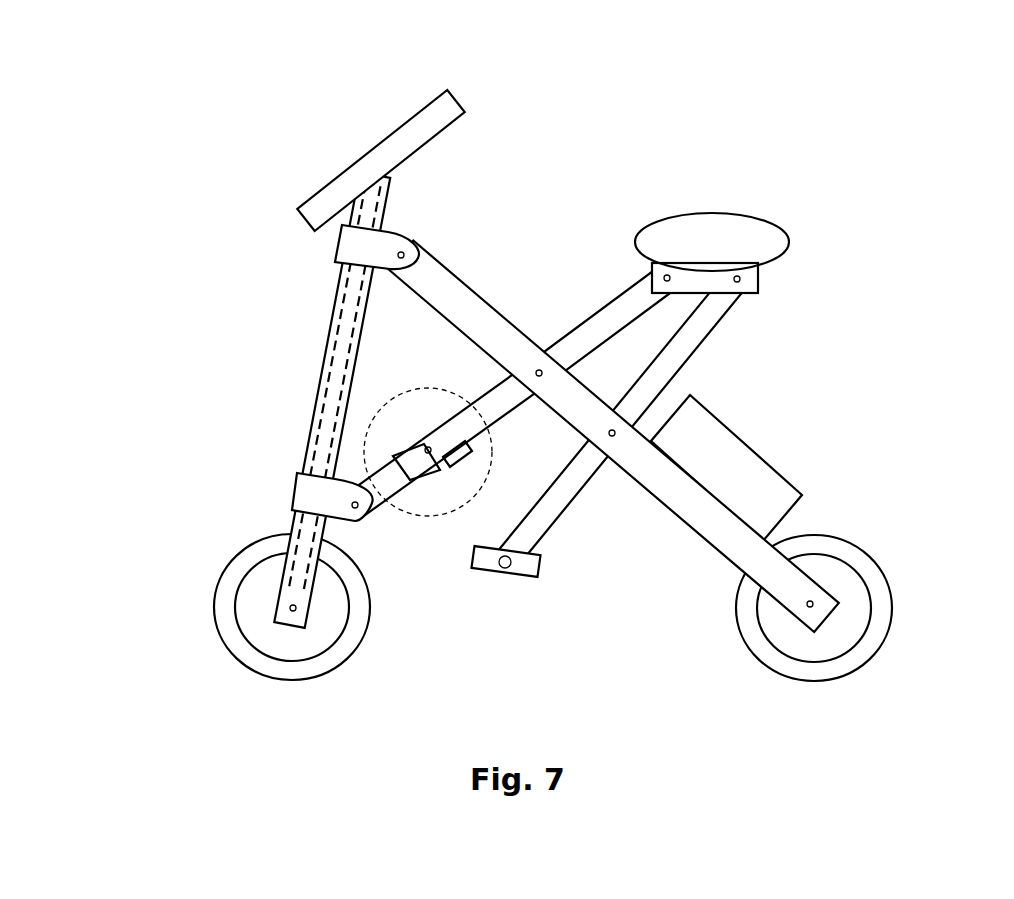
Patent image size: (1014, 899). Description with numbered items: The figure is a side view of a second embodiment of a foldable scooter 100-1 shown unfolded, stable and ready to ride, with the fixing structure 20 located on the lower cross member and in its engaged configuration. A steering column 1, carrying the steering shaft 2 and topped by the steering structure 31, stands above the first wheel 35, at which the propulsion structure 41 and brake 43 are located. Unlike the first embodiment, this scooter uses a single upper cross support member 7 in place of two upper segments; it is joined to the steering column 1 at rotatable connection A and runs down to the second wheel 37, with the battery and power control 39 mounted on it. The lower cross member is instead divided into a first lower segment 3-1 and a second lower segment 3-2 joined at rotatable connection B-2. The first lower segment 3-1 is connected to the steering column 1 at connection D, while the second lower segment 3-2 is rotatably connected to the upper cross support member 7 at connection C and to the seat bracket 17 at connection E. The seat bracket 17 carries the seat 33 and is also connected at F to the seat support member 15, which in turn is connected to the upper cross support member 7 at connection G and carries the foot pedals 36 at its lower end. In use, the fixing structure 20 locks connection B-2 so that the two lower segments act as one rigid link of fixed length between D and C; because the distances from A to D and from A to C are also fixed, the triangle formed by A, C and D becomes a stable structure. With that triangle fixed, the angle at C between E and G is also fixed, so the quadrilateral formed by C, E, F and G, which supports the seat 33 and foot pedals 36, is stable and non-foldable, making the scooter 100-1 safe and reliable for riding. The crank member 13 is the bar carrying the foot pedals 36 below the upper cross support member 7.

The scooter 100-1 is at (205, 60).
The steering column 1 is at (328, 410).
The steering shaft 2 is at (350, 300).
The first lower segment 3-1 is at (357, 482).
The second lower segment 3-2 is at (500, 375).
The upper cross support member 7 is at (423, 267).
The pedal crank bar 13 is at (563, 397).
The seat support member 15 is at (692, 337).
The seat bracket 17 is at (715, 285).
The fixing structure 20 is at (442, 517).
The steering structure 31 is at (380, 143).
The seat 33 is at (725, 236).
The first wheel 35 is at (261, 620).
The foot pedals 36 is at (520, 567).
The second wheel 37 is at (813, 567).
The battery and power control 39 is at (730, 455).
The propulsion structure 41 is at (254, 630).
The brake 43 is at (272, 632).
The rotatable connection A is at (403, 250).
The rotatable connection B-2 is at (428, 453).
The rotatable connection C is at (539, 377).
The rotatable connection D is at (352, 505).
The rotatable connection E is at (662, 277).
The rotatable connection F is at (742, 280).
The rotatable connection G is at (613, 437).